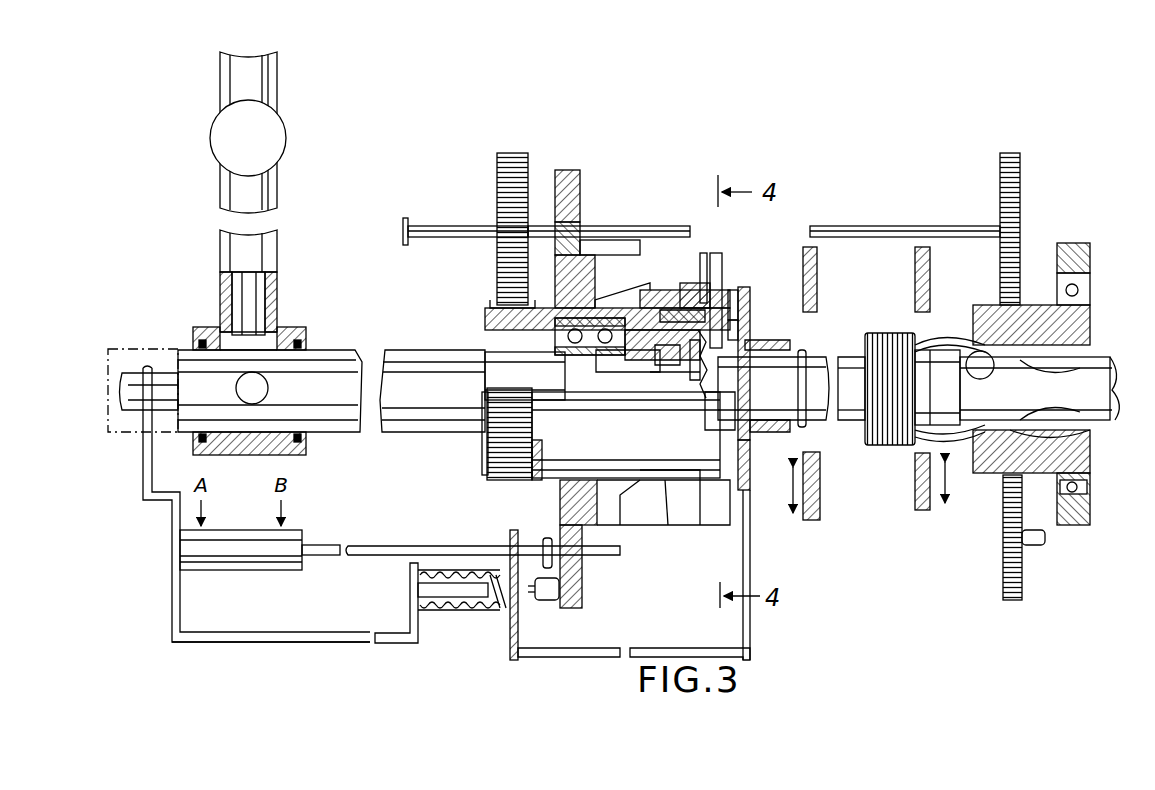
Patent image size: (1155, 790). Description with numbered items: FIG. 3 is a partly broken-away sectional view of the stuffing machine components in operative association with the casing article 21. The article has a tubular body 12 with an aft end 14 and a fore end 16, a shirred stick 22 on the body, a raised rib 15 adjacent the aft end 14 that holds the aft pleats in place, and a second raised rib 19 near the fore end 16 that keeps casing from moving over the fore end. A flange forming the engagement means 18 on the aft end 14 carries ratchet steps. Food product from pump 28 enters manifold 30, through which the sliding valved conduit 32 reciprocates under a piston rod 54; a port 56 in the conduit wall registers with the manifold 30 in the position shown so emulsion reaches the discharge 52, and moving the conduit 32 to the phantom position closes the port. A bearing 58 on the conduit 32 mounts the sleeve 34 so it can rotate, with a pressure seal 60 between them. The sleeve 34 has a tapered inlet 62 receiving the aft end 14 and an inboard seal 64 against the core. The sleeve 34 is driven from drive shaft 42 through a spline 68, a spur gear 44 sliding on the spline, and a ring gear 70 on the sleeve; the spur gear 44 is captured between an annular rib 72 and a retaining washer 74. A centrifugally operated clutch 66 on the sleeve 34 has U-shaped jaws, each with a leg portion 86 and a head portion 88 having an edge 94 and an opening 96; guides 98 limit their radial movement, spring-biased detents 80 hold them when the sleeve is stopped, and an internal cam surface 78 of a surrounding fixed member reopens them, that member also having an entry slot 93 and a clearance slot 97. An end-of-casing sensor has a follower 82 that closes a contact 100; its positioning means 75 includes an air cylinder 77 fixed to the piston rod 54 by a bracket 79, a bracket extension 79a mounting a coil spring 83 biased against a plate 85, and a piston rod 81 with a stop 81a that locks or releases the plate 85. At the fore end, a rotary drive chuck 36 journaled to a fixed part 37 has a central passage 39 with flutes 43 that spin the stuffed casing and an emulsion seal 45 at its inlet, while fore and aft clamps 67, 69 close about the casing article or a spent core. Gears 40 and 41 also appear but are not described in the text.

The tubular body 12 is at (826, 424).
The aft end 14 is at (686, 367).
The raised rib 15 is at (800, 356).
The fore end 16 is at (648, 526).
The engagement means 18 is at (700, 380).
The second raised rib 19 is at (937, 387).
The casing article 21 is at (846, 336).
The shirred stick 22 is at (885, 335).
The pump 28 is at (288, 140).
The manifold 30 is at (293, 330).
The sliding valved conduit 32 is at (470, 352).
The sleeve 34 is at (617, 447).
The rotary drive chuck 36 is at (1090, 310).
The fixed part 37 is at (1090, 510).
The central passage 39 is at (1090, 432).
The gear 40 is at (1003, 576).
The gear 41 is at (1000, 190).
The drive shaft 42 is at (622, 226).
The flutes 43 is at (1060, 376).
The spur gear 44 is at (497, 182).
The emulsion seal 45 is at (975, 330).
The discharge 52 is at (615, 357).
The piston rod 54 is at (165, 362).
The port 56 is at (237, 388).
The bearing 58 is at (600, 390).
The pressure seal 60 is at (648, 320).
The tapered inlet 62 is at (690, 360).
The inboard seal 64 is at (645, 385).
The centrifugally operated clutch device 66 is at (740, 290).
The fore clamp 67 is at (915, 272).
The spline 68 is at (485, 240).
The aft clamp 69 is at (818, 272).
The ring gear 70 is at (515, 482).
The annular rib 72 is at (533, 482).
The retaining washer 74 is at (482, 456).
The positioning means 75 is at (345, 588).
The air cylinder 77 is at (250, 572).
The internal cam surface 78 is at (668, 530).
The bracket 79 is at (158, 502).
The bracket extension 79a is at (285, 644).
The spring biased detent 80 is at (685, 302).
The piston rod 81 is at (398, 546).
The stop 81a is at (545, 538).
The follower 82 is at (752, 476).
The coil spring 83 is at (462, 612).
The plate 85 is at (508, 630).
The leg portion 86 is at (752, 330).
The head portion 88 is at (705, 270).
The entry slot 93 is at (645, 270).
The edge 94 is at (716, 258).
The opening 96 is at (746, 300).
The clearance slot 97 is at (700, 526).
The spaced guides 98 is at (712, 420).
The contact 100 is at (555, 602).